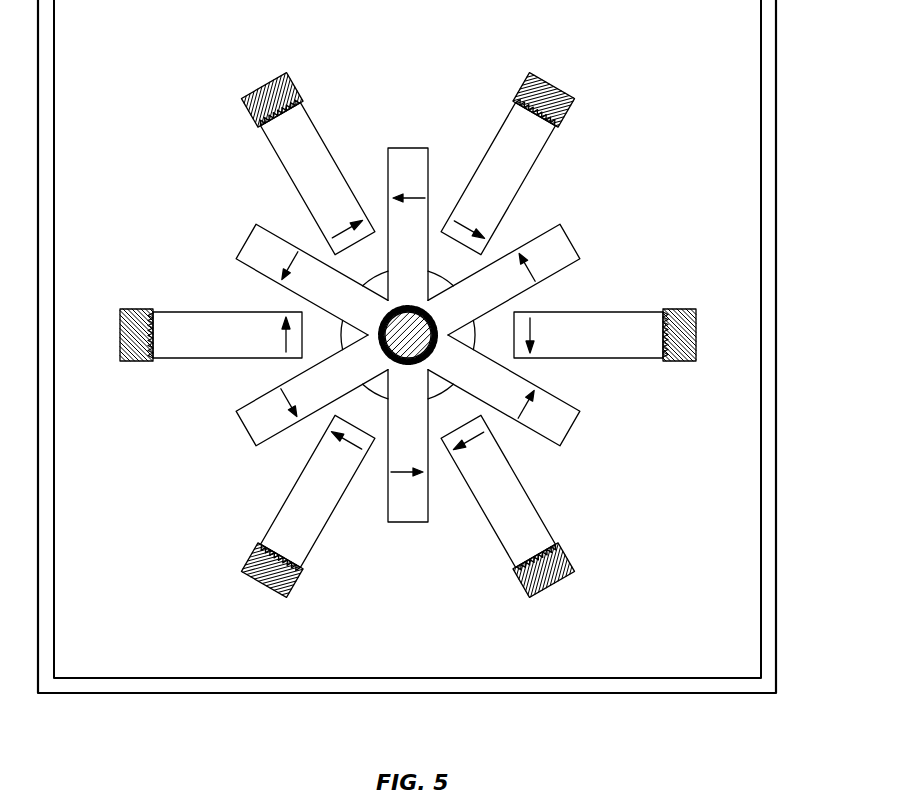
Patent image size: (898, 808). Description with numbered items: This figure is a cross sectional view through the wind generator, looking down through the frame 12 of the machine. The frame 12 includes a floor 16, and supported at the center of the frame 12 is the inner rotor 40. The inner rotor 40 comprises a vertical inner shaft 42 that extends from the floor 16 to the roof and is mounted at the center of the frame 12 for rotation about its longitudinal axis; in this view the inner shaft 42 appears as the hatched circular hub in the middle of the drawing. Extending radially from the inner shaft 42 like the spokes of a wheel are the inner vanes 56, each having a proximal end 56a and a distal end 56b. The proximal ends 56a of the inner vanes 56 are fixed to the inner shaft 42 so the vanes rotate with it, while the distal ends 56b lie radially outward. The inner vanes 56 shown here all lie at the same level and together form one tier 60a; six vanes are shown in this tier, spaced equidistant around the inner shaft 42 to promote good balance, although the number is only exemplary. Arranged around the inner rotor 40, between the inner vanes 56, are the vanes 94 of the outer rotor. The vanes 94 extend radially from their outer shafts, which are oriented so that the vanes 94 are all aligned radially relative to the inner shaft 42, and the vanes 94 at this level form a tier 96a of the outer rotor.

The frame 12 is at (786, 556).
The floor 16 is at (740, 642).
The inner rotor 40 is at (432, 302).
The inner shaft 42 is at (442, 338).
The inner vanes 56 is at (418, 158).
The proximal ends of inner vanes 56a is at (437, 367).
The distal ends of inner vanes 56b is at (566, 402).
The tier of inner vanes 60a is at (412, 140).
The vanes of outer rotor 94 is at (413, 340).
The tier of outer rotor vanes 96a is at (322, 548).